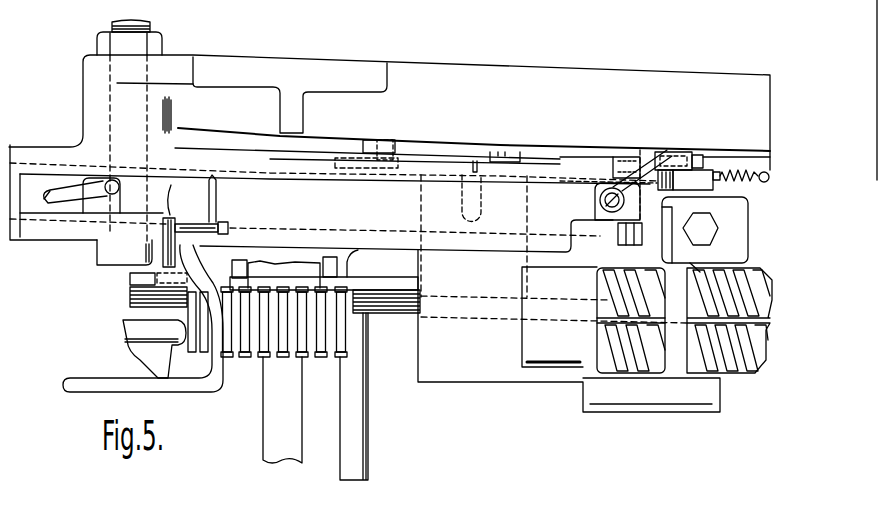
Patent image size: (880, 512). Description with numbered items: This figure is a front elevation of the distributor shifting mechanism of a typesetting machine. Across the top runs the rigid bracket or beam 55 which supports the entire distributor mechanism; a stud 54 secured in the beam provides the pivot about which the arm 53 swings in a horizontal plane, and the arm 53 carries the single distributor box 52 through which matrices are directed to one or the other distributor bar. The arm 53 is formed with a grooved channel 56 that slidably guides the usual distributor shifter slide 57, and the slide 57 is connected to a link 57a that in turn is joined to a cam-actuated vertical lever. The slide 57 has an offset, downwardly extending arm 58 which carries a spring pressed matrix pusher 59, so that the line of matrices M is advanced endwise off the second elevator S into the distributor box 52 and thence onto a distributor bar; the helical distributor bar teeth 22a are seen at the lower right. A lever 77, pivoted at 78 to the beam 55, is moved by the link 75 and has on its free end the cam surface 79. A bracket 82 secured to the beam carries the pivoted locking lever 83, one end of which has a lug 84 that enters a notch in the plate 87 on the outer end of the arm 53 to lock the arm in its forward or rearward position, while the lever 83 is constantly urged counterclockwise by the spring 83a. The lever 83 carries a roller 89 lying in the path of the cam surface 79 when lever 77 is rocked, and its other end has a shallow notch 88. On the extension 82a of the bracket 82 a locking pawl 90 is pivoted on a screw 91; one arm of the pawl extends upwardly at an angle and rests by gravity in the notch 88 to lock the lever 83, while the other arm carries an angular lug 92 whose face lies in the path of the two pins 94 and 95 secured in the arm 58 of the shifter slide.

The helical gear 22a is at (735, 374).
The distributor box 52 is at (462, 383).
The arm 53 is at (43, 152).
The stud 54 is at (149, 23).
The bracket or beam 55 is at (447, 73).
The grooved channel 56 is at (340, 227).
The distributor shifter slide 57 is at (93, 208).
The link 57a is at (50, 203).
The arm 58 is at (223, 375).
The matrix pusher 59 is at (187, 320).
The link 75 is at (367, 155).
The lever 77 is at (538, 155).
The pivot 78 is at (520, 151).
The cam surface 79 is at (672, 152).
The bracket 82 is at (705, 230).
The extension 82a is at (688, 260).
The locking lever 83 is at (685, 185).
The spring 83a is at (740, 156).
The lug 84 is at (666, 189).
The plate 87 is at (618, 158).
The shallow notch 88 is at (700, 170).
The roller 89 is at (696, 155).
The locking pawl 90 is at (650, 148).
The screw 91 is at (600, 201).
The angular lug 92 is at (618, 236).
The pin 94 is at (190, 229).
The pin 95 is at (228, 230).
The matrices M is at (340, 358).
The second elevator S is at (400, 310).